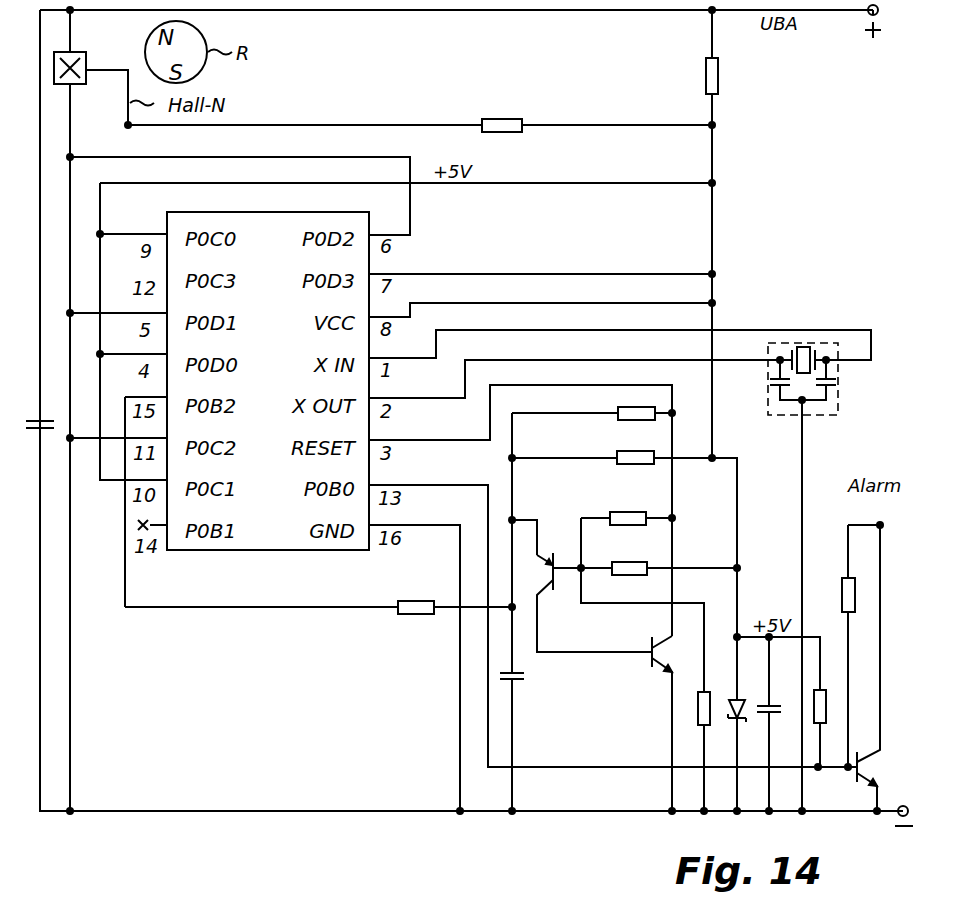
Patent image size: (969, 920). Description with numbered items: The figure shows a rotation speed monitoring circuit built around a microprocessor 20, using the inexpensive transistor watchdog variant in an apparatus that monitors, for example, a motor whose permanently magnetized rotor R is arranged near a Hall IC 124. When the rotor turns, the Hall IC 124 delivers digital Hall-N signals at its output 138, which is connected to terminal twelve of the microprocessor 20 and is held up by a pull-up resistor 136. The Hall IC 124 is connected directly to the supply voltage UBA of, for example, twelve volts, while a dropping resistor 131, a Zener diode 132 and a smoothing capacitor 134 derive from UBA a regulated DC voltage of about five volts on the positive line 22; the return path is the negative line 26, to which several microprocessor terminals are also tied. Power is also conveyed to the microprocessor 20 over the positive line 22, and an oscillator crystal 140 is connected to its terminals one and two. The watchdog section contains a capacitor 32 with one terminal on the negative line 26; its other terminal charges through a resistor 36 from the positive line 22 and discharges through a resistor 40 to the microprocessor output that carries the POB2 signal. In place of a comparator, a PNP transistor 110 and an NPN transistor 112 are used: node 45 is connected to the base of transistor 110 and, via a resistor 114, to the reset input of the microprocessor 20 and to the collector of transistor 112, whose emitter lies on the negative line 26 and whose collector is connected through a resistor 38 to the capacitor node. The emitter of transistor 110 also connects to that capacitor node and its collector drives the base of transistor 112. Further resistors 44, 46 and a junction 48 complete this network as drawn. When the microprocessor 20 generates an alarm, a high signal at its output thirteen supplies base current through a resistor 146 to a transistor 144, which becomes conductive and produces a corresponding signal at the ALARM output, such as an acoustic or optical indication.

The microprocessor 20 is at (290, 552).
The positive line 22 is at (737, 527).
The negative line 26 is at (605, 813).
The capacitor 32 is at (526, 676).
The resistor 36 is at (615, 458).
The resistor 38 is at (616, 413).
The resistor 40 is at (418, 614).
The resistor 44 is at (628, 562).
The node 45 is at (583, 568).
The resistor 46 is at (698, 710).
The junction 48 is at (672, 518).
The PNP transistor 110 is at (542, 582).
The NPN transistor 112 is at (650, 660).
The resistor 114 is at (620, 512).
The Hall IC 124 is at (80, 52).
The dropping resistor 131 is at (720, 76).
The Zener diode 132 is at (732, 698).
The smoothing capacitor 134 is at (776, 704).
The pull-up resistor 136 is at (508, 119).
The output of Hall IC 138 is at (112, 70).
The oscillator crystal 140 is at (838, 408).
The transistor 144 is at (864, 770).
The resistor 146 is at (824, 682).